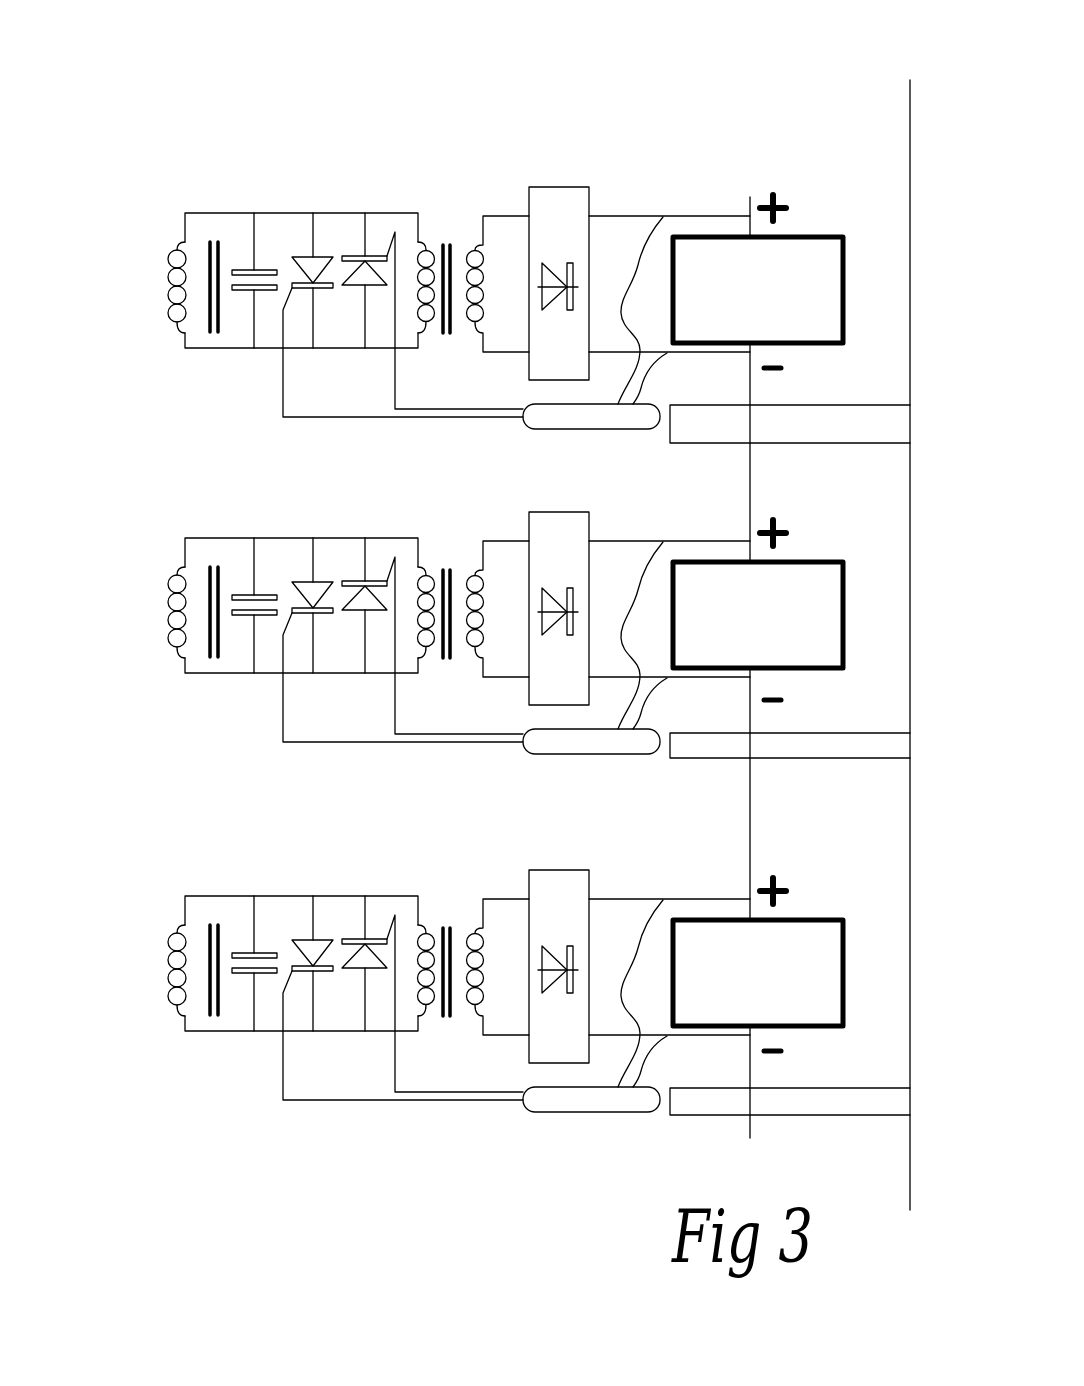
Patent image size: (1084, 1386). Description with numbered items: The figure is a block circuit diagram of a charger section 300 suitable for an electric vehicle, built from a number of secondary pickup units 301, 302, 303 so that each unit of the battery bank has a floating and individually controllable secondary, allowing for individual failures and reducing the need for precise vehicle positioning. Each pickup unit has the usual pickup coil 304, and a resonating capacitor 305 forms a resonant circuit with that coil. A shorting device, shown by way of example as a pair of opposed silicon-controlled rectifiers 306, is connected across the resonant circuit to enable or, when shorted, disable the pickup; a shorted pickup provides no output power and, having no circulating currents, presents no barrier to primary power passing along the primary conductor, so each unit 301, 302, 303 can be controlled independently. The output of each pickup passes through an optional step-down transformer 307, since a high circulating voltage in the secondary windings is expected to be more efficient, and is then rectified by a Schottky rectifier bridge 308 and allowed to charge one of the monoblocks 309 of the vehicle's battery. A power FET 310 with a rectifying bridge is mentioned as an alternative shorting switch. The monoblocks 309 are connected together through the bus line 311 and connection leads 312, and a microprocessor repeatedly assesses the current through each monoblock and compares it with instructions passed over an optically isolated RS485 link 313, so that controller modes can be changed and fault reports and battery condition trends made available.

The plurality of pick-up charging circuits 300 is at (598, 85).
The secondary pickup unit 301 is at (481, 285).
The secondary pickup unit 302 is at (486, 614).
The secondary pickup unit 303 is at (502, 985).
The pickup coil 304 is at (180, 1006).
The resonating capacitor 305 is at (238, 1015).
The pair of opposed silicon-controlled rectifiers 306 is at (401, 972).
The step-down transformer 307 is at (472, 935).
The Schottky rectifier bridge 308 is at (573, 939).
The monoblock 309 is at (768, 938).
The power FET 310 is at (583, 1128).
The series connection bus 311 is at (798, 818).
The connection leads 312 is at (670, 944).
The optically isolated RS485 link 313 is at (910, 537).